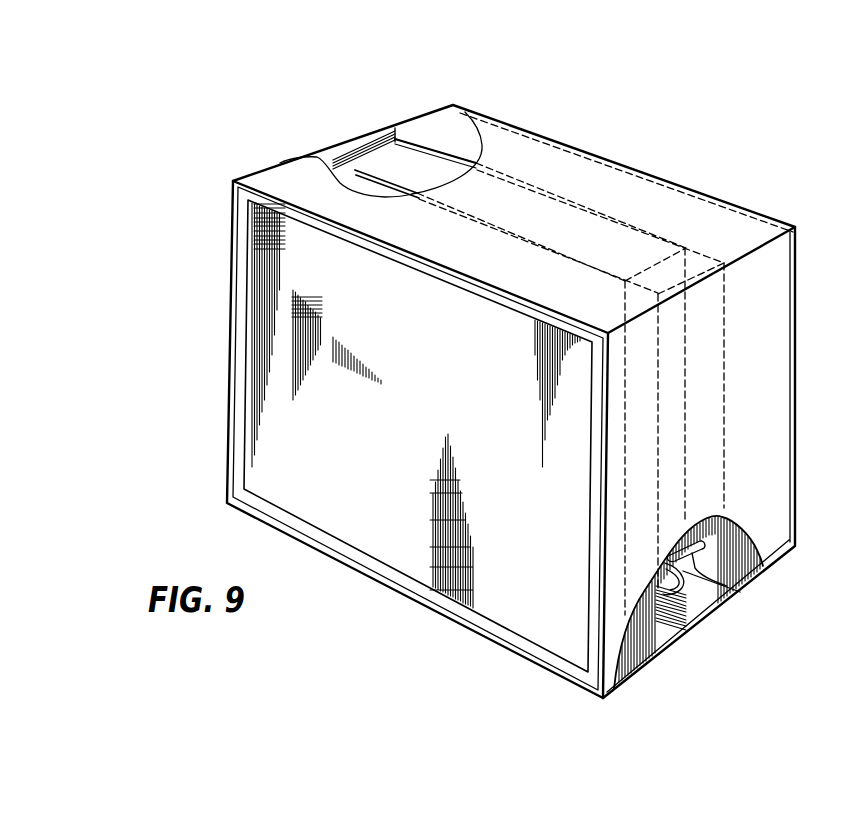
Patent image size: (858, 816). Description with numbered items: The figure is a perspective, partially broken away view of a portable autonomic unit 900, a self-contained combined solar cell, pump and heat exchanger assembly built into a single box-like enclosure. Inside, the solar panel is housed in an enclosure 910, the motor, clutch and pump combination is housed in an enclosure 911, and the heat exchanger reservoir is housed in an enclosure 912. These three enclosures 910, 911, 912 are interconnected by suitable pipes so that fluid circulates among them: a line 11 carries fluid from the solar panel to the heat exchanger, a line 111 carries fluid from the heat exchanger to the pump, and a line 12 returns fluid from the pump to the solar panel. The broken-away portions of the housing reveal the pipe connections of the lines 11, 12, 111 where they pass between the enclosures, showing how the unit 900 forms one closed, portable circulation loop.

The portable autonomic unit 900 is at (628, 182).
The enclosure 910 is at (428, 125).
The enclosure 911 is at (412, 175).
The enclosure 912 is at (300, 170).
The line 11 is at (361, 152).
The line 12 is at (693, 548).
The line 111 is at (683, 590).